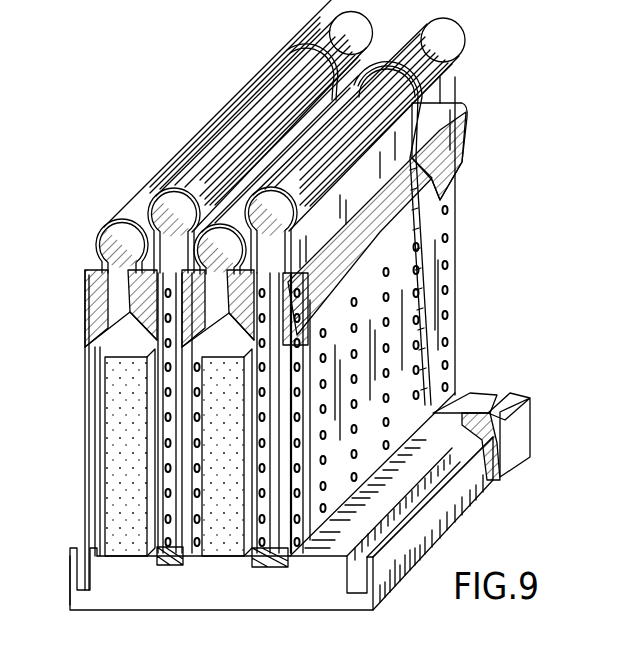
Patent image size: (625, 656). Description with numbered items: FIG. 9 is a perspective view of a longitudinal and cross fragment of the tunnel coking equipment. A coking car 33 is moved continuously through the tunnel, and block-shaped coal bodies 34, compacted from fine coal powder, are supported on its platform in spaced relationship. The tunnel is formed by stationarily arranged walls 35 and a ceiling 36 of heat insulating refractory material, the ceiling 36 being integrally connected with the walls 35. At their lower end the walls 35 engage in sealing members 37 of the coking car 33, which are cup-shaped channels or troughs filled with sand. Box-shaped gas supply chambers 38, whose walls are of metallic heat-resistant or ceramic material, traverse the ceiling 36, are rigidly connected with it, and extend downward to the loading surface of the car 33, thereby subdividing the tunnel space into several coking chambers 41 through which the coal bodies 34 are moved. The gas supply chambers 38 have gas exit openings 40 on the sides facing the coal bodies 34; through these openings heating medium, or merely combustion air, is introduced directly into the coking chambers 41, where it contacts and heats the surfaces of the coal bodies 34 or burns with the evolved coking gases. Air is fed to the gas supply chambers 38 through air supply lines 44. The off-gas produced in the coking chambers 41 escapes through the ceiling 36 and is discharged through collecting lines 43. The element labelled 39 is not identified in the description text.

The coking car 33 is at (186, 594).
The coal body 34 is at (115, 380).
The wall 35 is at (85, 472).
The ceiling 36 is at (90, 295).
The sealing member 37 is at (83, 568).
The gas supply chamber 38 is at (274, 538).
The clip 39 is at (170, 563).
The gas exit opening 40 is at (445, 268).
The coking chamber 41 is at (97, 423).
The collecting line 43 is at (117, 244).
The air supply line 44 is at (165, 198).